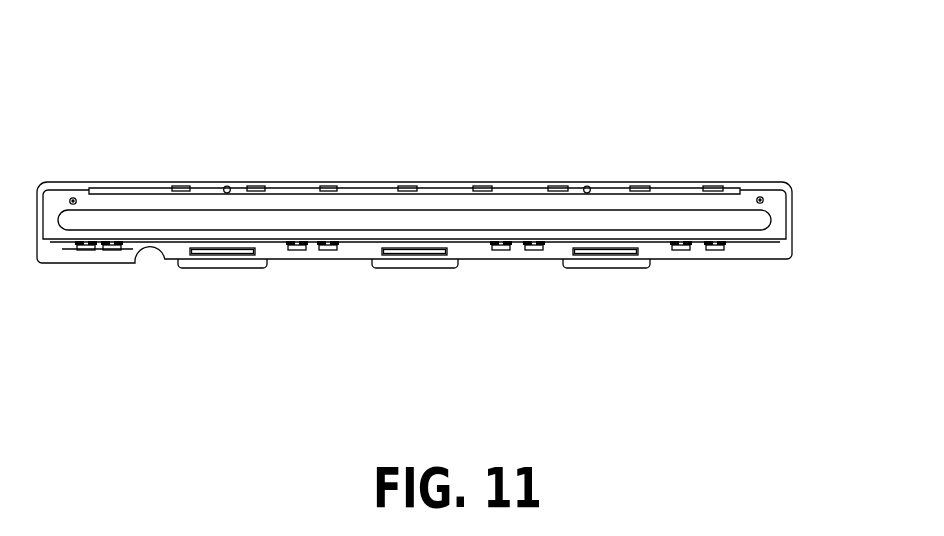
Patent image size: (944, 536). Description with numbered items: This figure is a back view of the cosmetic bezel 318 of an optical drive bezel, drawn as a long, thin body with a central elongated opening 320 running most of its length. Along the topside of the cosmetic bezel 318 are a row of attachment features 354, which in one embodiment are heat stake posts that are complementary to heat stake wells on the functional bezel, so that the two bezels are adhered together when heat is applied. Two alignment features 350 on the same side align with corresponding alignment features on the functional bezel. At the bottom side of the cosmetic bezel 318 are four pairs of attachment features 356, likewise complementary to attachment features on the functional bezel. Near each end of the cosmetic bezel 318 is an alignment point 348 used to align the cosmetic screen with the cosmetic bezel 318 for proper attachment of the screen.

The cosmetic bezel 318 is at (473, 158).
The elongated slot 320 is at (762, 218).
The alignment points 348 is at (71, 199).
The alignment features 350 is at (226, 186).
The attachment features 354 is at (327, 186).
The attachment features 356 is at (86, 250).